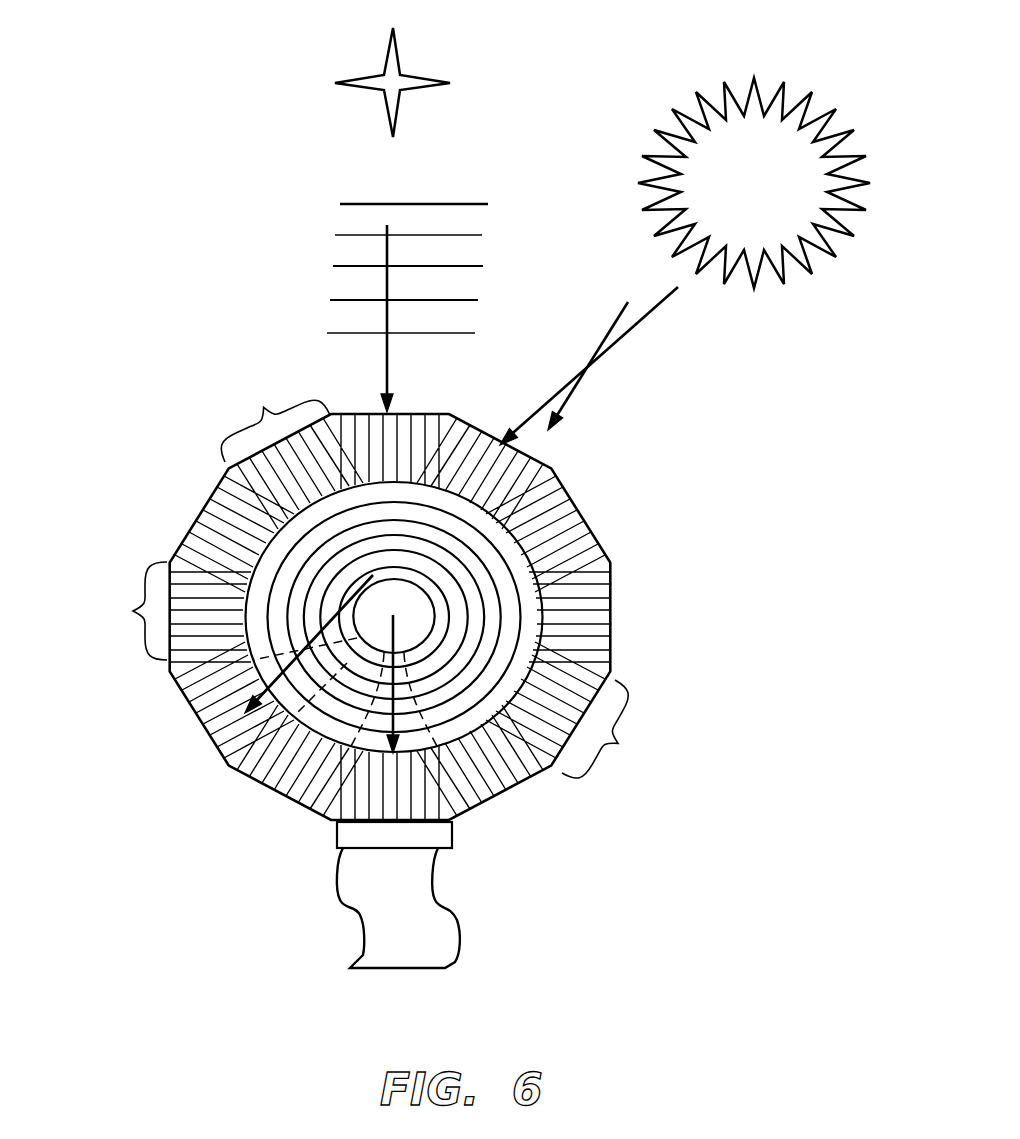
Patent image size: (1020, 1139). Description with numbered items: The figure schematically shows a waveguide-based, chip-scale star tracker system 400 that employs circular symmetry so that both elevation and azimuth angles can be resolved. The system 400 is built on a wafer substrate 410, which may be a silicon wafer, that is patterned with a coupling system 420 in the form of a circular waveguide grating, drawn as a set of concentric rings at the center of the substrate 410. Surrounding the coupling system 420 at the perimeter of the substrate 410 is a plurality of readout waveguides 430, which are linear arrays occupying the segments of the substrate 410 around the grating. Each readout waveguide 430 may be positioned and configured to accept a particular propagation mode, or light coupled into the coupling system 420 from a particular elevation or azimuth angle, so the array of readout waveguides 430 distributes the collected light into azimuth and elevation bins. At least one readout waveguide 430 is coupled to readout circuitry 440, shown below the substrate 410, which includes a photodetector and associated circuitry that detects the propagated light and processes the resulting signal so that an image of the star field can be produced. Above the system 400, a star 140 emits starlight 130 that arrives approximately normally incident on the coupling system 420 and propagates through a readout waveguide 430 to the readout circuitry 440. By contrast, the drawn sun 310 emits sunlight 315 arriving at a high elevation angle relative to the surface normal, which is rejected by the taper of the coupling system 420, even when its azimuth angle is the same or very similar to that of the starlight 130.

The star tracker system 400 is at (182, 66).
The star 140 is at (383, 75).
The starlight 130 is at (345, 265).
The sun / second light source 310 is at (815, 118).
The sunlight 315 is at (615, 358).
The wafer substrate 410 is at (598, 540).
The coupling system 420 is at (262, 546).
The readout waveguides 430 is at (262, 408).
The readout circuitry 440 is at (460, 928).